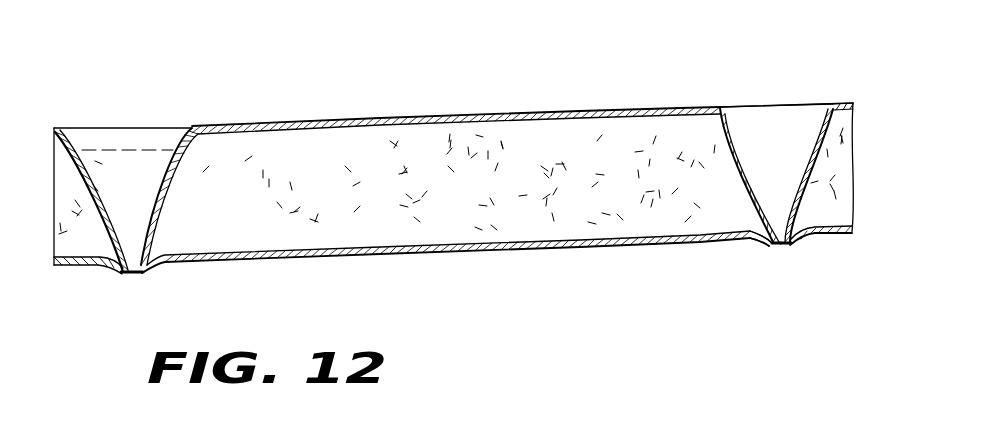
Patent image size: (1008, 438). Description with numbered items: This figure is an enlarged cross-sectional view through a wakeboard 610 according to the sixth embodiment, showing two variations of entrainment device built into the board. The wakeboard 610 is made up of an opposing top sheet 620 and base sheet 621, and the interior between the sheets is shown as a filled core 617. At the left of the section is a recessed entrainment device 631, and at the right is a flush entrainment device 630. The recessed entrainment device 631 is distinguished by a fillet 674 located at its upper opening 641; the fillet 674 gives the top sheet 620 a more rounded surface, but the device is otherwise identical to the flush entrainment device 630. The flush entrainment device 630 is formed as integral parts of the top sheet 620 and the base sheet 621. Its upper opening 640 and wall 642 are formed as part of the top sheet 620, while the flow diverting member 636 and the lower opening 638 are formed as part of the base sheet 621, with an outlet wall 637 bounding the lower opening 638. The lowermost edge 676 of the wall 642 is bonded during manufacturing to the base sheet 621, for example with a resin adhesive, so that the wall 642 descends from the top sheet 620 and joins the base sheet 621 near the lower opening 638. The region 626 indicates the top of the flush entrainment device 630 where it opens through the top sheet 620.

The wakeboard 610 is at (342, 61).
The fluid 617 is at (523, 135).
The top sheet 620 is at (427, 121).
The base sheet 621 is at (468, 254).
The second channel 626 is at (758, 61).
The flush entrainment device 630 is at (790, 62).
The recessed entrainment device 631 is at (137, 71).
The flow diverting member 636 is at (800, 247).
The outlet wall 637 is at (787, 251).
The lower opening 638 is at (780, 251).
The upper opening 640 is at (738, 106).
The upper opening 641 is at (101, 126).
The wall 642 is at (826, 128).
The fillet 674 is at (176, 132).
The lowermost edge 676 is at (773, 249).